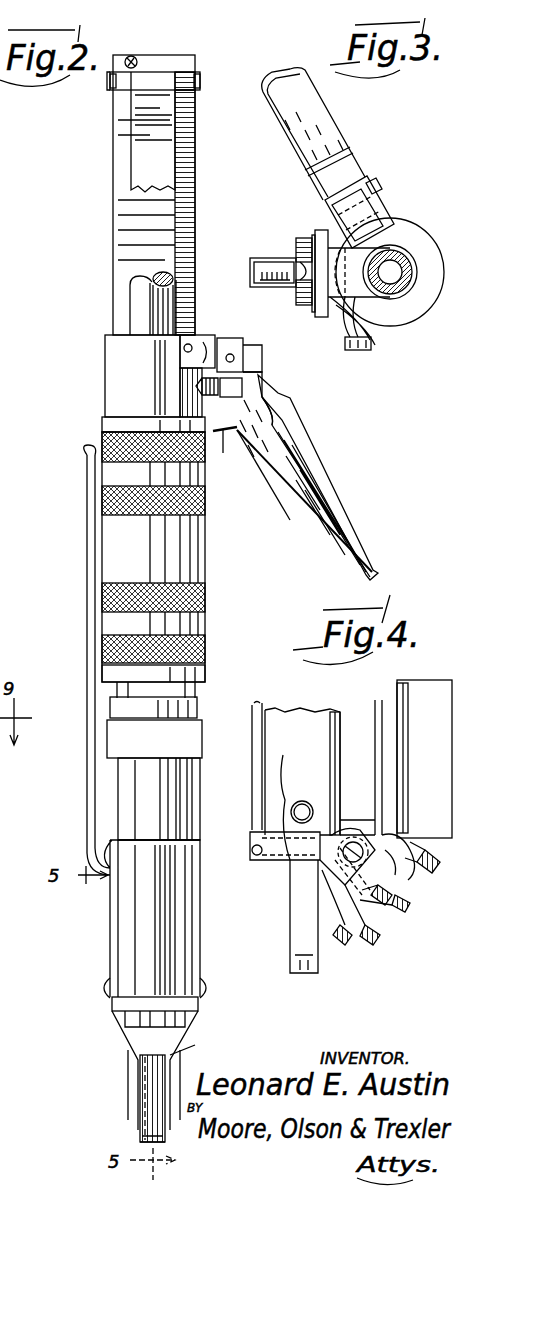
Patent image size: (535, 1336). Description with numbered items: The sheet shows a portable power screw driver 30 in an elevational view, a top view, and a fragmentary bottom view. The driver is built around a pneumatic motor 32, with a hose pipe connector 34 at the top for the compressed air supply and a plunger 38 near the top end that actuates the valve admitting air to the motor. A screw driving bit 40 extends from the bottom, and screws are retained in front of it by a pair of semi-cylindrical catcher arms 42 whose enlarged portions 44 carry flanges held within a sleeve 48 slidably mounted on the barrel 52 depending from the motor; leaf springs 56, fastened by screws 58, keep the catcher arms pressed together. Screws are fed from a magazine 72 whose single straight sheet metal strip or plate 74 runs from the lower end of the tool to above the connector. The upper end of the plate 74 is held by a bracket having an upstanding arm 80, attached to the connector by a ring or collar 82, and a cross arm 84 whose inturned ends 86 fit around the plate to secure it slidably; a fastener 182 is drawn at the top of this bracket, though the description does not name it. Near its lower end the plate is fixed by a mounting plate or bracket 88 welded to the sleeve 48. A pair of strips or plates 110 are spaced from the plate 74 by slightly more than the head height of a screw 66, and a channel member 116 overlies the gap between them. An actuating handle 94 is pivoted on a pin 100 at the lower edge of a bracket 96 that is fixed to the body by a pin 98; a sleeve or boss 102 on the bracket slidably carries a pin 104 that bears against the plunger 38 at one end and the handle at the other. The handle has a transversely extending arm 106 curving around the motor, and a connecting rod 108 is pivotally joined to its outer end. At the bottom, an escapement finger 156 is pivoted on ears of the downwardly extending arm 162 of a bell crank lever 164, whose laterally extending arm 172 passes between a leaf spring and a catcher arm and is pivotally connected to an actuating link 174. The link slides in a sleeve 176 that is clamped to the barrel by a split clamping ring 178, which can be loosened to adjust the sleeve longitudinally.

In FIG. 2, the portable power screw driver 30 is at (212, 568).
In FIG. 3, the portable power screw driver 30 is at (425, 207).
In FIG. 2, the pneumatic motor 32 is at (190, 542).
In FIG. 2, the hose pipe connector 34 is at (147, 303).
In FIG. 3, the hose pipe connector 34 is at (392, 268).
In FIG. 2, the plunger 38 is at (200, 390).
In FIG. 2, the screw driving bit 40 is at (157, 1105).
In FIG. 2, the catcher arms 42 is at (147, 1132).
In FIG. 2, the enlarged portions 44 is at (82, 1026).
In FIG. 2, the sleeve 48 is at (112, 1000).
In FIG. 4, the sleeve 48 is at (340, 722).
In FIG. 2, the barrel 52 is at (172, 798).
In FIG. 2, the leaf springs 56 is at (126, 1061).
In FIG. 4, the leaf springs 56 is at (300, 910).
In FIG. 2, the screws 58 is at (104, 985).
In FIG. 4, the screws 58 is at (302, 800).
In FIG. 4, the screw 66 is at (350, 945).
In FIG. 3, the magazine 72 is at (273, 247).
In FIG. 4, the magazine 72 is at (414, 690).
In FIG. 2, the sheet metal strip or plate 74 is at (140, 210).
In FIG. 4, the sheet metal strip or plate 74 is at (380, 730).
In FIG. 2, the upstanding arm 80 is at (148, 160).
In FIG. 3, the upstanding arm 80 is at (372, 290).
In FIG. 3, the ring or collar 82 is at (405, 240).
In FIG. 2, the cross arm 84 is at (200, 80).
In FIG. 3, the cross arm 84 is at (324, 318).
In FIG. 2, the inturned ends 86 is at (106, 85).
In FIG. 3, the inturned ends 86 is at (308, 240).
In FIG. 2, the mounting plate or bracket 88 is at (118, 917).
In FIG. 4, the mounting plate or bracket 88 is at (357, 826).
In FIG. 2, the actuating handle 94 is at (292, 470).
In FIG. 3, the actuating handle 94 is at (307, 98).
In FIG. 2, the bracket 96 is at (225, 358).
In FIG. 3, the bracket 96 is at (387, 218).
In FIG. 2, the pin 98 is at (184, 348).
In FIG. 2, the pin 100 is at (262, 368).
In FIG. 3, the pin 100 is at (377, 193).
In FIG. 2, the sleeve or boss 102 is at (262, 472).
In FIG. 2, the pin 104 is at (270, 425).
In FIG. 2, the transversely extending arm 106 is at (214, 436).
In FIG. 3, the transversely extending arm 106 is at (360, 300).
In FIG. 2, the connecting rod 108 is at (88, 556).
In FIG. 3, the connecting rod 108 is at (355, 352).
In FIG. 4, the strips or plates 110 is at (398, 765).
In FIG. 4, the channel member 116 is at (416, 838).
In FIG. 4, the finger 156 is at (378, 938).
In FIG. 4, the downwardly extending arm 162 is at (390, 898).
In FIG. 2, the bell crank lever 164 is at (183, 1078).
In FIG. 4, the bell crank lever 164 is at (330, 891).
In FIG. 4, the laterally extending arm 172 is at (302, 784).
In FIG. 2, the actuating link 174 is at (190, 856).
In FIG. 4, the actuating link 174 is at (262, 718).
In FIG. 2, the sleeve 176 is at (195, 768).
In FIG. 2, the split clamping ring 178 is at (120, 738).
In FIG. 2, the screw 182 is at (134, 58).